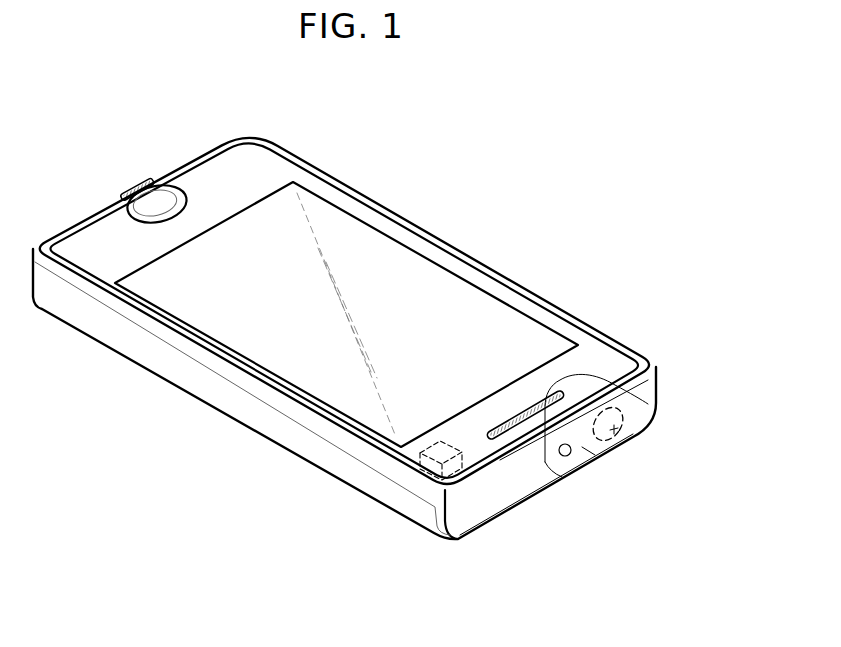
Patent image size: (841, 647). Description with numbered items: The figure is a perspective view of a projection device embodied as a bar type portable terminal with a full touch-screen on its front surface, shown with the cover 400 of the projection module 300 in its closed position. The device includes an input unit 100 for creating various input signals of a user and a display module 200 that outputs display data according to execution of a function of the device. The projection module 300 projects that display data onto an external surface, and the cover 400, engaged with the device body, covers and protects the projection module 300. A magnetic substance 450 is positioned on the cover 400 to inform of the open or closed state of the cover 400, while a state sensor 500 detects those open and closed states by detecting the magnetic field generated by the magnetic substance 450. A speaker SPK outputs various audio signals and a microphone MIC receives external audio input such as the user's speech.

The input unit 100 is at (213, 172).
The display module 200 is at (419, 296).
The projection module 300 is at (622, 448).
The cover 400 is at (593, 457).
The magnetic substance 450 is at (572, 458).
The state sensor 500 is at (412, 458).
The microphone MIC is at (136, 181).
The speaker SPK is at (648, 404).